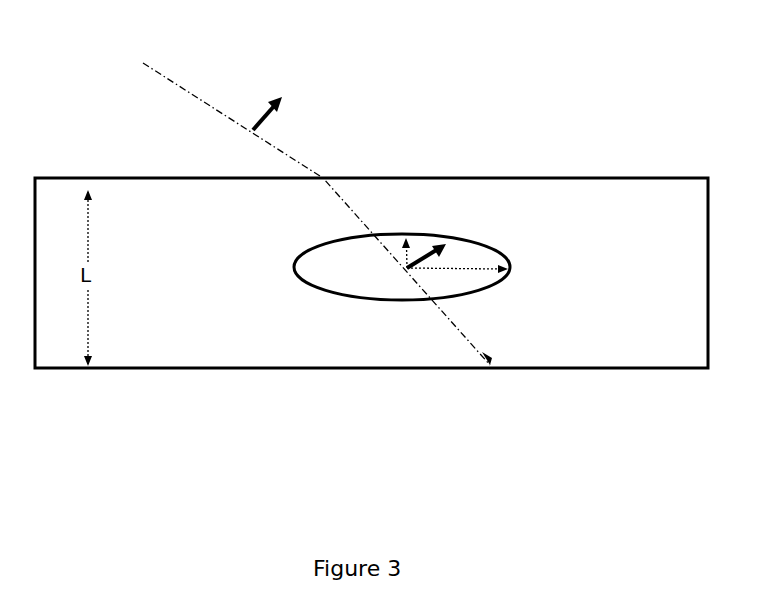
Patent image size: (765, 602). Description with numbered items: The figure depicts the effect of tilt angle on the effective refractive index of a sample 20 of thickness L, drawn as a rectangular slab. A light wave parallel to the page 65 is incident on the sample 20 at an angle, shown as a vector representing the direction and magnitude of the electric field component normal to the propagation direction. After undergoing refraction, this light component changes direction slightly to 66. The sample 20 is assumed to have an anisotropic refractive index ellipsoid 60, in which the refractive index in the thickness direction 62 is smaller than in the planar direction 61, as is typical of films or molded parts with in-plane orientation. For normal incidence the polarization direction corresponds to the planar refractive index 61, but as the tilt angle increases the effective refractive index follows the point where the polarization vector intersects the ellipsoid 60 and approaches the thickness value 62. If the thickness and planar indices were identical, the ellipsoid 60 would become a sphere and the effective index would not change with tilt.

The sample 20 is at (590, 200).
The anisotropic refractive index ellipsoid 60 is at (307, 250).
The planar direction refractive index 61 is at (478, 277).
The thickness direction refractive index 62 is at (413, 242).
The light wave parallel to the page 65 is at (277, 118).
The refracted light component 66 is at (448, 240).